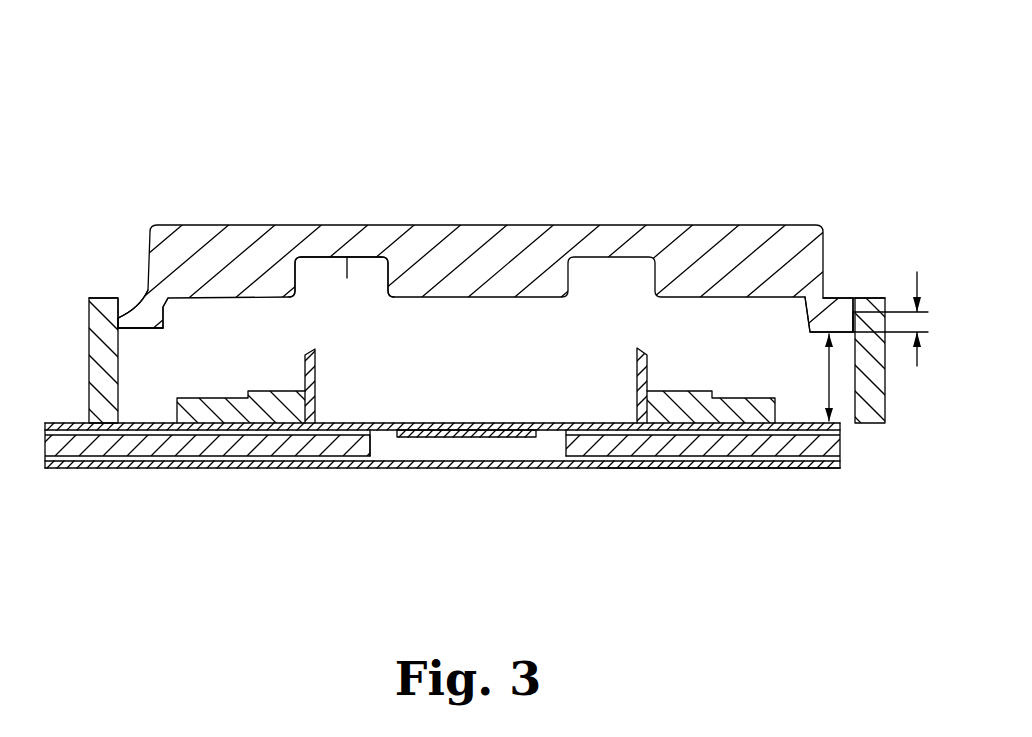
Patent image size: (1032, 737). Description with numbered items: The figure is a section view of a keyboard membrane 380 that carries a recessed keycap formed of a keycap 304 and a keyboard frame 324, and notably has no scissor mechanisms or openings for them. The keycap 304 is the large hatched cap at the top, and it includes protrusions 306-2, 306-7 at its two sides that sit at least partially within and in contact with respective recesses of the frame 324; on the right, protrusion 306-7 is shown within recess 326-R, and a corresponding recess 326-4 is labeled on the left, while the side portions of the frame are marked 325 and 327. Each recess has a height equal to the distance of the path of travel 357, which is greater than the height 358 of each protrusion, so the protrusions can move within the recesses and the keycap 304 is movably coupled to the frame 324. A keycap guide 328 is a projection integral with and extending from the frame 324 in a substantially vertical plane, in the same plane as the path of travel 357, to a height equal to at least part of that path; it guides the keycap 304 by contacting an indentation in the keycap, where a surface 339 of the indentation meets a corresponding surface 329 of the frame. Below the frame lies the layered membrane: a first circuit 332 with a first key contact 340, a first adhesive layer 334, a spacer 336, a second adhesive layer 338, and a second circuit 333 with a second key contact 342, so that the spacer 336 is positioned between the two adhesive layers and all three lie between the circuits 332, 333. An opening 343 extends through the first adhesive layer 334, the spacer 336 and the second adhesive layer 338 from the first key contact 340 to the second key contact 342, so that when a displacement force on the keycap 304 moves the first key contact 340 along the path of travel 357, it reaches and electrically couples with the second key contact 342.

The keyboard membrane 380 is at (333, 66).
The keycap 304 is at (482, 222).
The protrusion 306-2 is at (137, 300).
The protrusion 306-7 is at (841, 304).
The surface 339 is at (294, 288).
The path of travel 357 is at (347, 278).
The height 358 is at (894, 332).
The keyboard frame 324 is at (74, 294).
The left side wall 325 is at (110, 387).
The wall groove (left) 326-4 is at (134, 348).
The recess 326-R is at (852, 330).
The right side wall 327 is at (853, 425).
The keycap guide 328 is at (235, 398).
The surface 329 is at (306, 356).
The first circuit 332 is at (343, 422).
The first adhesive layer 334 is at (334, 446).
The spacer 336 is at (720, 448).
The opening 343 is at (388, 442).
The first key contact 340 is at (520, 428).
The second key contact 342 is at (473, 458).
The second circuit 333 is at (683, 469).
The second adhesive layer 338 is at (770, 469).